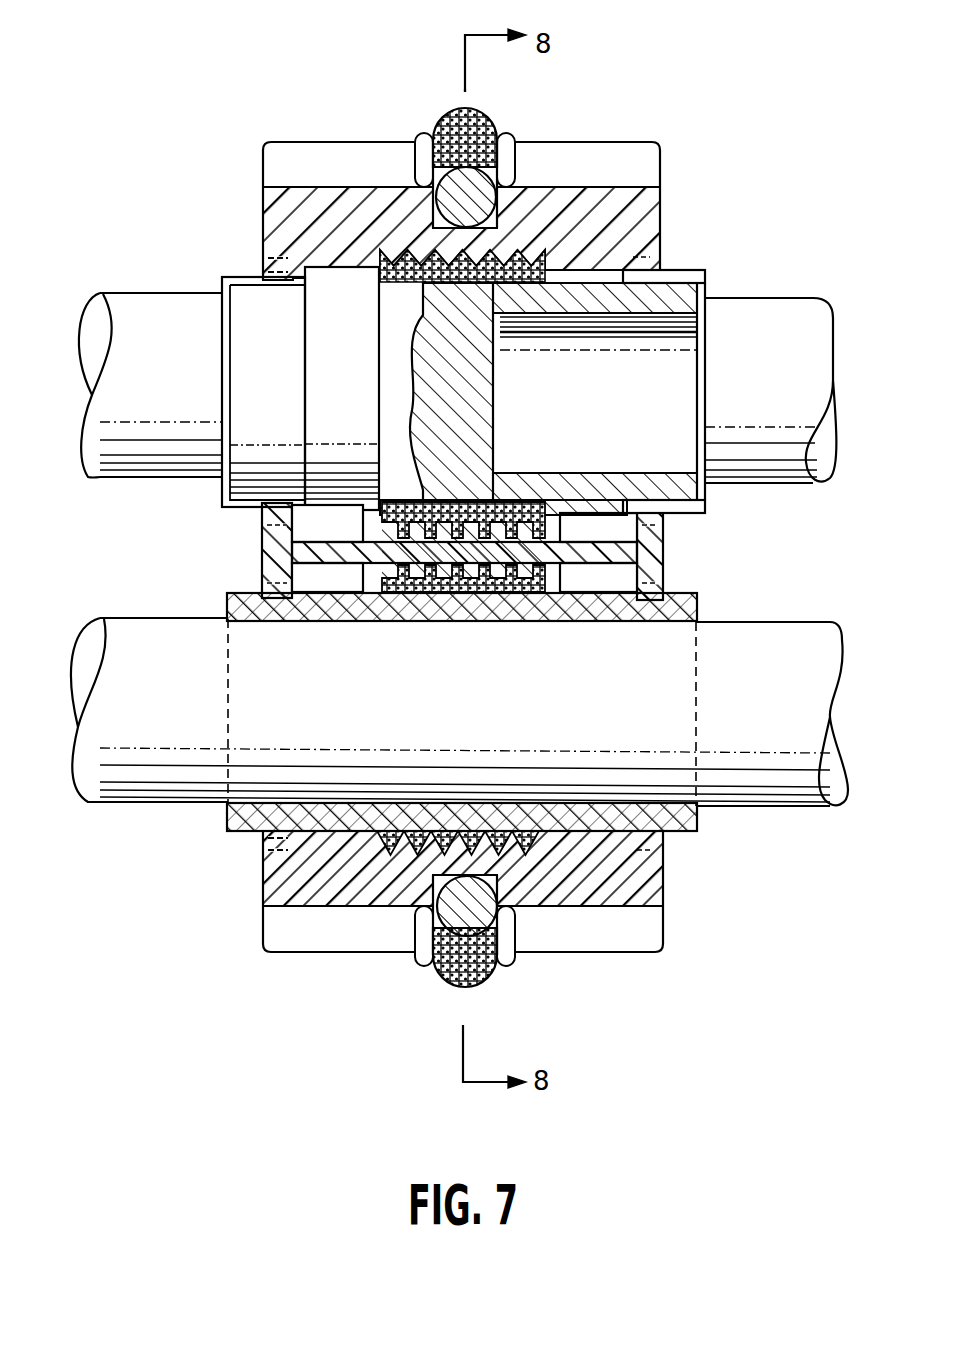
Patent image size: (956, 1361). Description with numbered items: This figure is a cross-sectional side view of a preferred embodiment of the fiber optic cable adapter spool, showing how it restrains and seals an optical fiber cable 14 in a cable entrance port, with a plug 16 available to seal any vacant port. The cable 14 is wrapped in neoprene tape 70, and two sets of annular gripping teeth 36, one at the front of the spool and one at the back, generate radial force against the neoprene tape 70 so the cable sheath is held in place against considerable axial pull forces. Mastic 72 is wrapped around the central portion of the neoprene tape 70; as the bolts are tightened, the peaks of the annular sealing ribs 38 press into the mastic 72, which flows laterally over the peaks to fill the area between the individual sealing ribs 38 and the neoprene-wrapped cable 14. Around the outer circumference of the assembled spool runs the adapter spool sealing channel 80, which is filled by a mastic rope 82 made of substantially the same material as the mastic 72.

The optical fiber cable 14 is at (803, 288).
The plug 16 is at (684, 278).
The gripping teeth 36 is at (270, 262).
The sealing ribs 38 is at (424, 258).
The neoprene tape 70 is at (228, 815).
The mastic 72 is at (520, 283).
The adapter spool sealing channel 80 is at (440, 968).
The mastic rope 82 is at (483, 978).